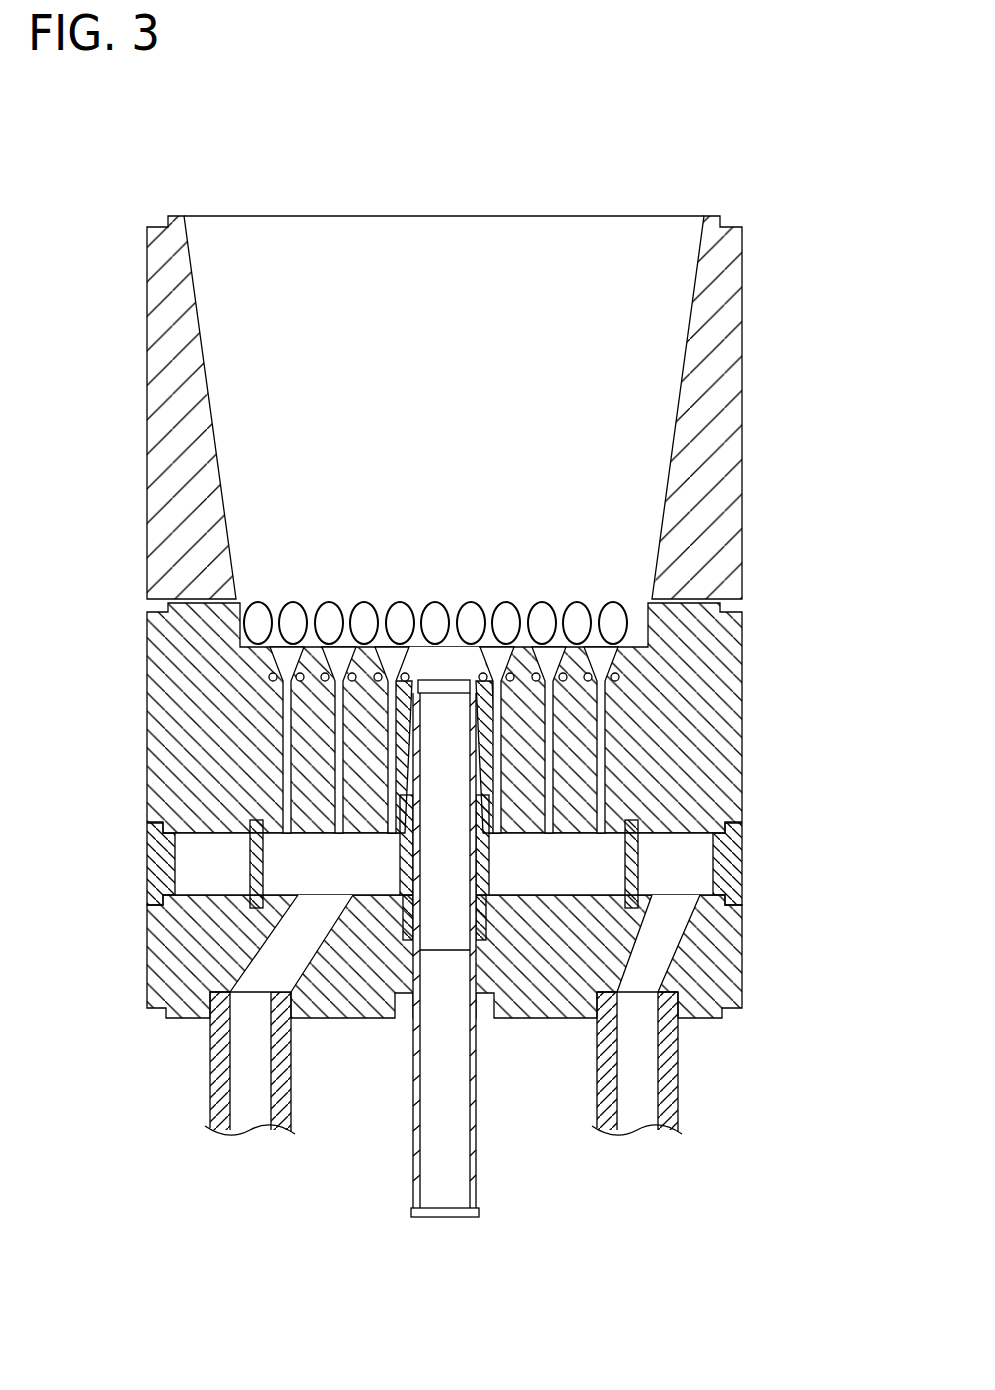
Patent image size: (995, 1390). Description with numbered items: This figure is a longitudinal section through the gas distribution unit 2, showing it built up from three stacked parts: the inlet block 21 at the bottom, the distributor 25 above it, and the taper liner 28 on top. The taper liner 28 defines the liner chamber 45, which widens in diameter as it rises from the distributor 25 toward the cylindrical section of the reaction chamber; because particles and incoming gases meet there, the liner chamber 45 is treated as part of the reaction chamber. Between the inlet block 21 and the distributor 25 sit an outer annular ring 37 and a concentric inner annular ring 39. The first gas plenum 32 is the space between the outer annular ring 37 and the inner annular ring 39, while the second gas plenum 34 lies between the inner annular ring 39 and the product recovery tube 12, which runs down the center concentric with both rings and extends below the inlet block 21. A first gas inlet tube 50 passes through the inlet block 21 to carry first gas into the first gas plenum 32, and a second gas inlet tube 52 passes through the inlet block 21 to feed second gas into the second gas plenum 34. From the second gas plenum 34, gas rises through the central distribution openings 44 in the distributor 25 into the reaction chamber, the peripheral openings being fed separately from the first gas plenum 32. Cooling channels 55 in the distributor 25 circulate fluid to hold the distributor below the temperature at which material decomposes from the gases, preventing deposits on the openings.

The gas distribution unit 2 is at (725, 130).
The liner chamber 45 is at (518, 253).
The taper liner 28 is at (162, 345).
The cooling channels 55 is at (613, 685).
The central distribution openings 44 is at (600, 722).
The distributor 25 is at (727, 757).
The inner annular ring 39 is at (250, 847).
The outer annular ring 37 is at (153, 867).
The first gas plenum 32 is at (197, 884).
The second gas plenum 34 is at (545, 870).
The inlet block 21 is at (727, 960).
The second gas inlet tube 52 is at (210, 1100).
The first gas inlet tube 50 is at (672, 1097).
The product recovery tube 12 is at (415, 1127).